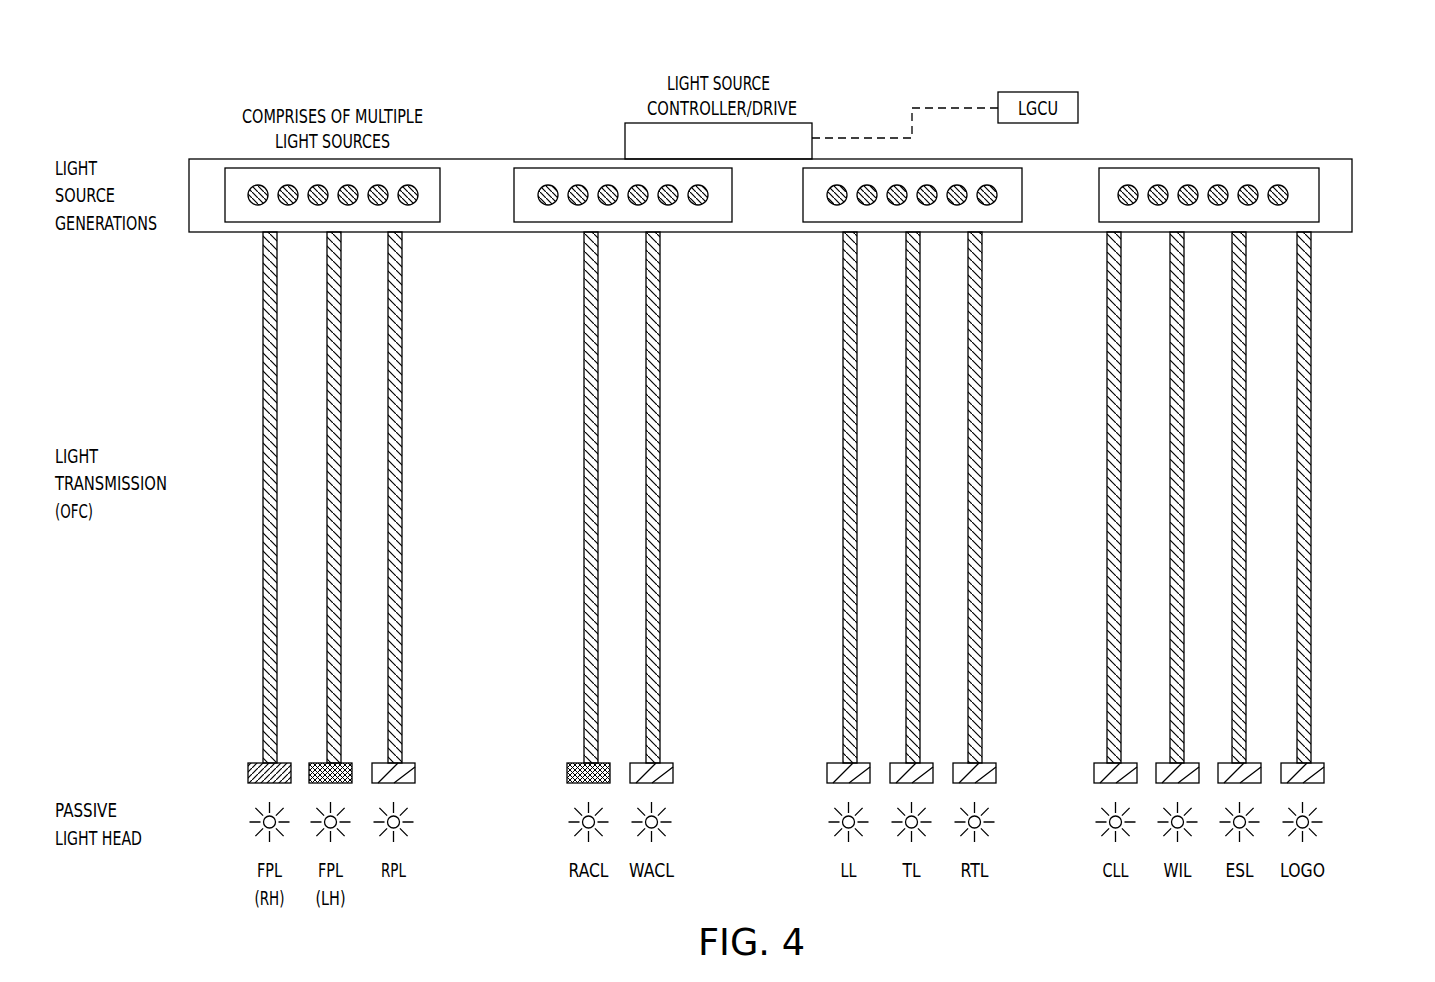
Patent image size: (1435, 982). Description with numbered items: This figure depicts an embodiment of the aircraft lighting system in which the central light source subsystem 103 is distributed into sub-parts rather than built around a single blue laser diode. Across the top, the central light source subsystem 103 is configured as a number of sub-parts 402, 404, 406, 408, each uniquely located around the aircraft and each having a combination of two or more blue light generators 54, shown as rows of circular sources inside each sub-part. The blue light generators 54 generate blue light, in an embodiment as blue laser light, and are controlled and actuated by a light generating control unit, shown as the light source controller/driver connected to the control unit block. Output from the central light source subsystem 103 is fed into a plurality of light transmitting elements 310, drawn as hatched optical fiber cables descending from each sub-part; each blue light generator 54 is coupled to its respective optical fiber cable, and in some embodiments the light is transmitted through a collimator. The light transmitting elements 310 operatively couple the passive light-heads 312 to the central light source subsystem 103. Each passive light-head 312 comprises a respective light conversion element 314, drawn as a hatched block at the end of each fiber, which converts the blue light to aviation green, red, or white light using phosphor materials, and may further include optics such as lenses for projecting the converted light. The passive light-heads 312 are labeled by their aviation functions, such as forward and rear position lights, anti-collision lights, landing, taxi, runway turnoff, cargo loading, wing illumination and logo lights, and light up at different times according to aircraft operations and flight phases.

The central light source subsystem 103 is at (210, 168).
The blue light generator 54 is at (578, 190).
The sub-part of the central light source subsystem 402 is at (428, 205).
The sub-part of the central light source subsystem 404 is at (717, 208).
The sub-part of the central light source subsystem 406 is at (1010, 208).
The sub-part of the central light source subsystem 408 is at (1305, 185).
The light transmitting elements 310 is at (250, 260).
The light conversion element 314 is at (232, 790).
The passive light-heads 312 is at (1335, 790).